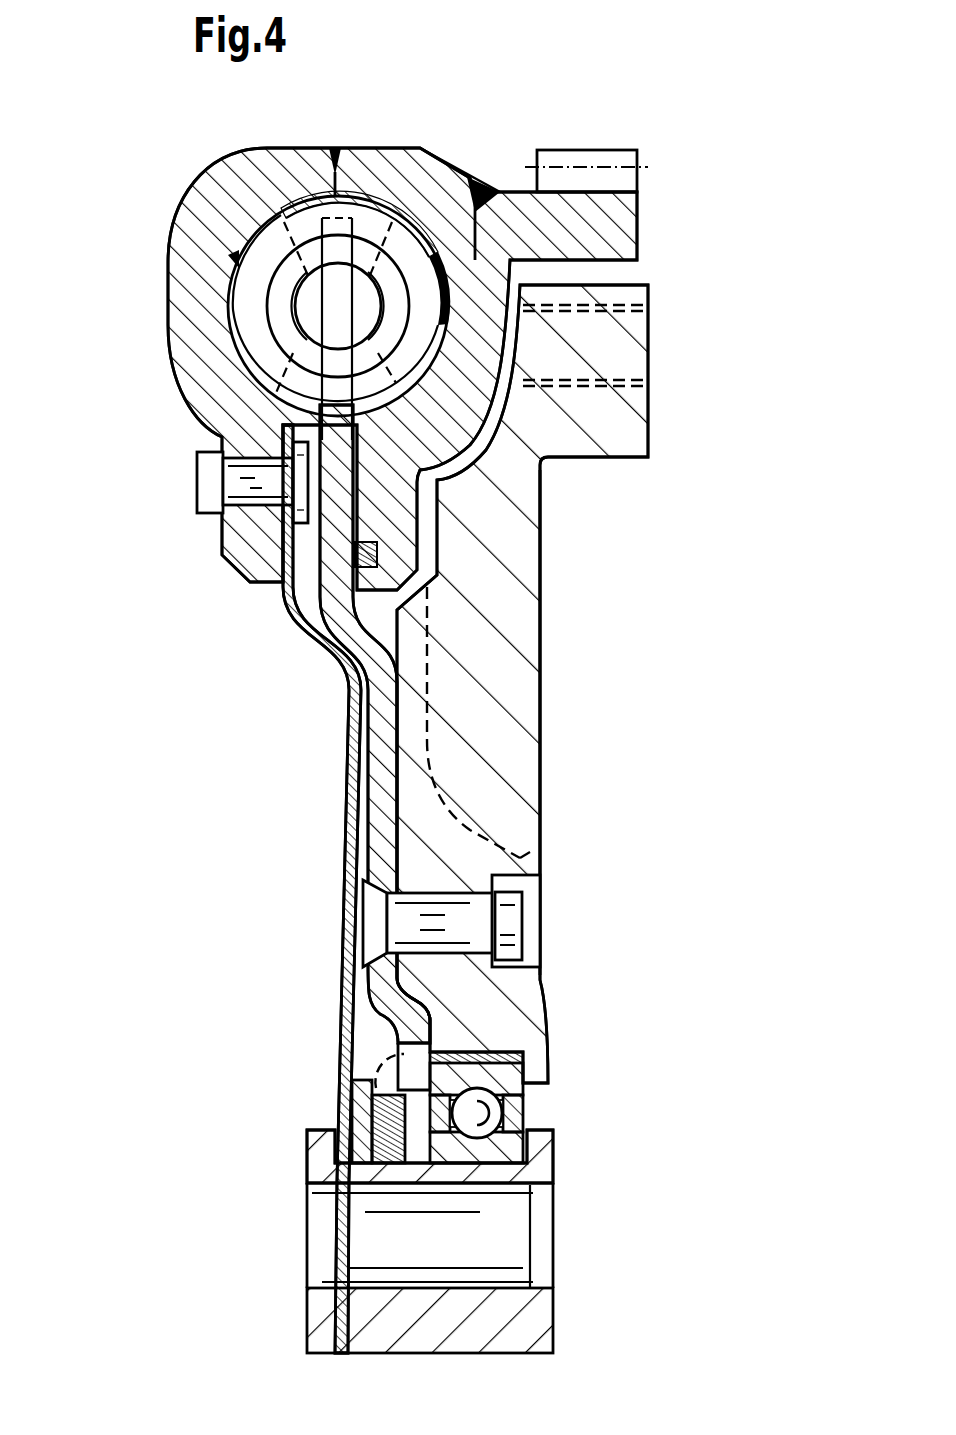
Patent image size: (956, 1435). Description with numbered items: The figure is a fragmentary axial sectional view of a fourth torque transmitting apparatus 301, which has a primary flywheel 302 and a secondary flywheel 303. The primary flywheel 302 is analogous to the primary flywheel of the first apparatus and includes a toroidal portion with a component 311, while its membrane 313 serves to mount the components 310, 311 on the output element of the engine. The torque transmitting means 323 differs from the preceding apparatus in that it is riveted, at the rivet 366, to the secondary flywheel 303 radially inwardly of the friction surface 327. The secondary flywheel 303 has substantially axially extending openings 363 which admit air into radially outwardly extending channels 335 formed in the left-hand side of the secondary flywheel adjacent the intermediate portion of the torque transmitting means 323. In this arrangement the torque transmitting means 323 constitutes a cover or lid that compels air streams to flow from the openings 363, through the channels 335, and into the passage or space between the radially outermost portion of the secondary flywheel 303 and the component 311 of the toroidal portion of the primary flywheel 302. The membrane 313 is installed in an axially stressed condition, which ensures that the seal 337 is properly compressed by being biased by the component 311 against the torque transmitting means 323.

The torque transmitting apparatus 301 is at (620, 110).
The primary flywheel 302 is at (180, 405).
The secondary flywheel 303 is at (520, 612).
The component of the primary flywheel 310 is at (215, 192).
The component of the toroidal portion of the primary flywheel 311 is at (415, 180).
The membrane 313 is at (348, 795).
The torque transmitting means 323 is at (378, 676).
The friction surface 327 is at (540, 713).
The channels 335 is at (410, 748).
The seal 337 is at (357, 567).
The openings 363 is at (520, 858).
The rivet 366 is at (470, 908).